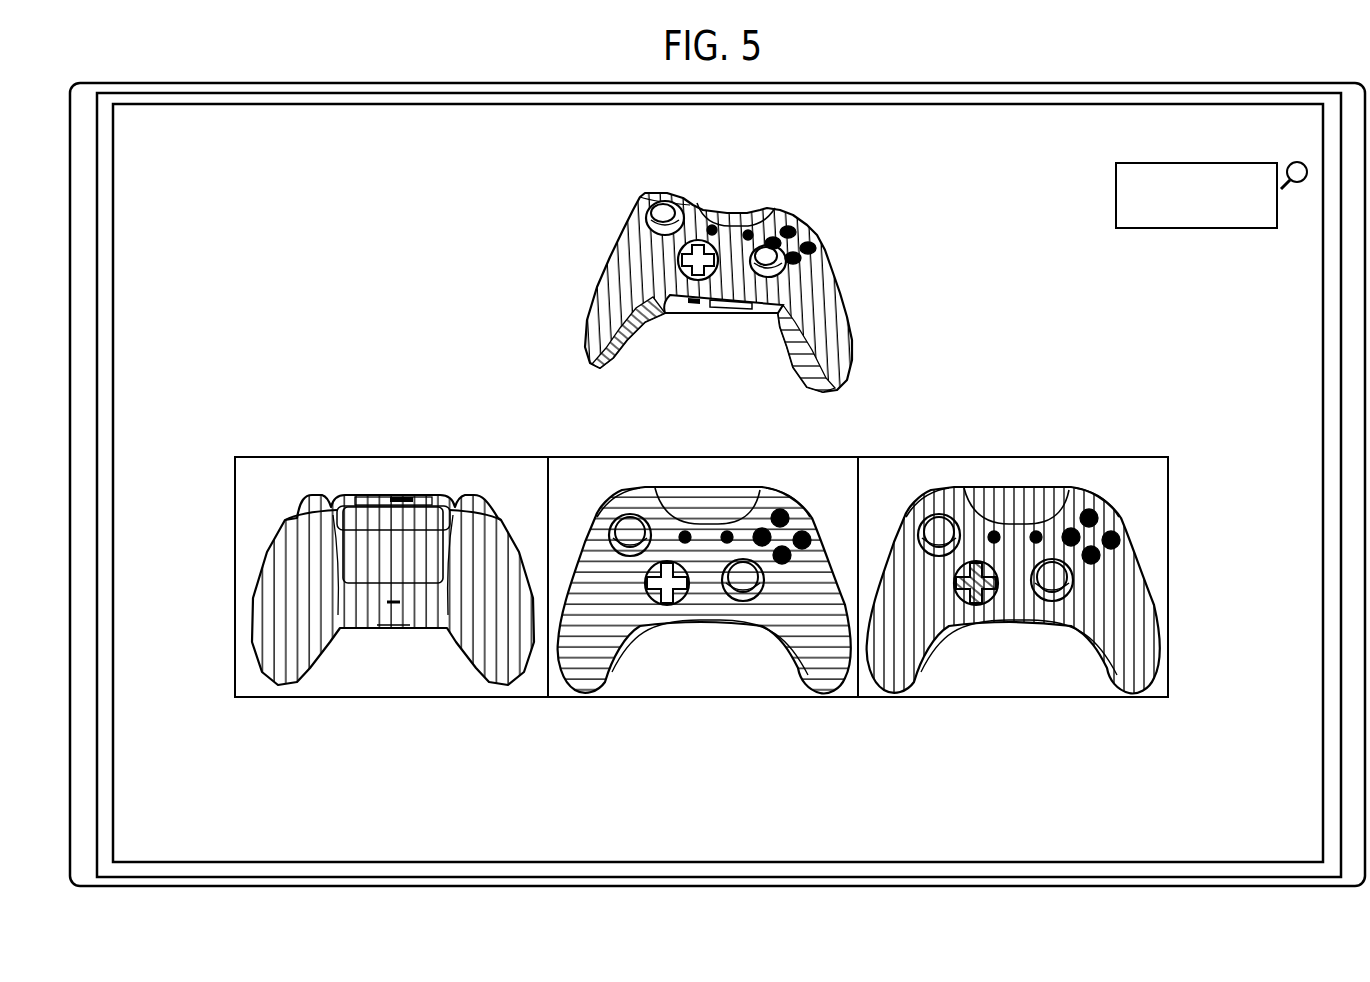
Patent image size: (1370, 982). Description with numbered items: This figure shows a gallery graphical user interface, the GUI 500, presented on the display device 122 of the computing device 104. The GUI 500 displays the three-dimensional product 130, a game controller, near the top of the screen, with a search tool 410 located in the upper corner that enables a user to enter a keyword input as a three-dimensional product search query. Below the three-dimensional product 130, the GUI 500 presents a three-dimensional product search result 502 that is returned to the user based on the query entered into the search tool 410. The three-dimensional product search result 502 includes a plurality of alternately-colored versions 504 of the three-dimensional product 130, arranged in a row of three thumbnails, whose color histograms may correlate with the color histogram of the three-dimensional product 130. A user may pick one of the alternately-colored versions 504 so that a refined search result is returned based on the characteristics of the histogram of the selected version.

The computing device 104 is at (92, 83).
The display device 122 is at (170, 93).
The GUI 500 is at (236, 104).
The 3D product 130 is at (858, 193).
The search tool 410 is at (1307, 142).
The 3D product search result 502 is at (1178, 450).
The alternately-colored versions 504 is at (537, 489).